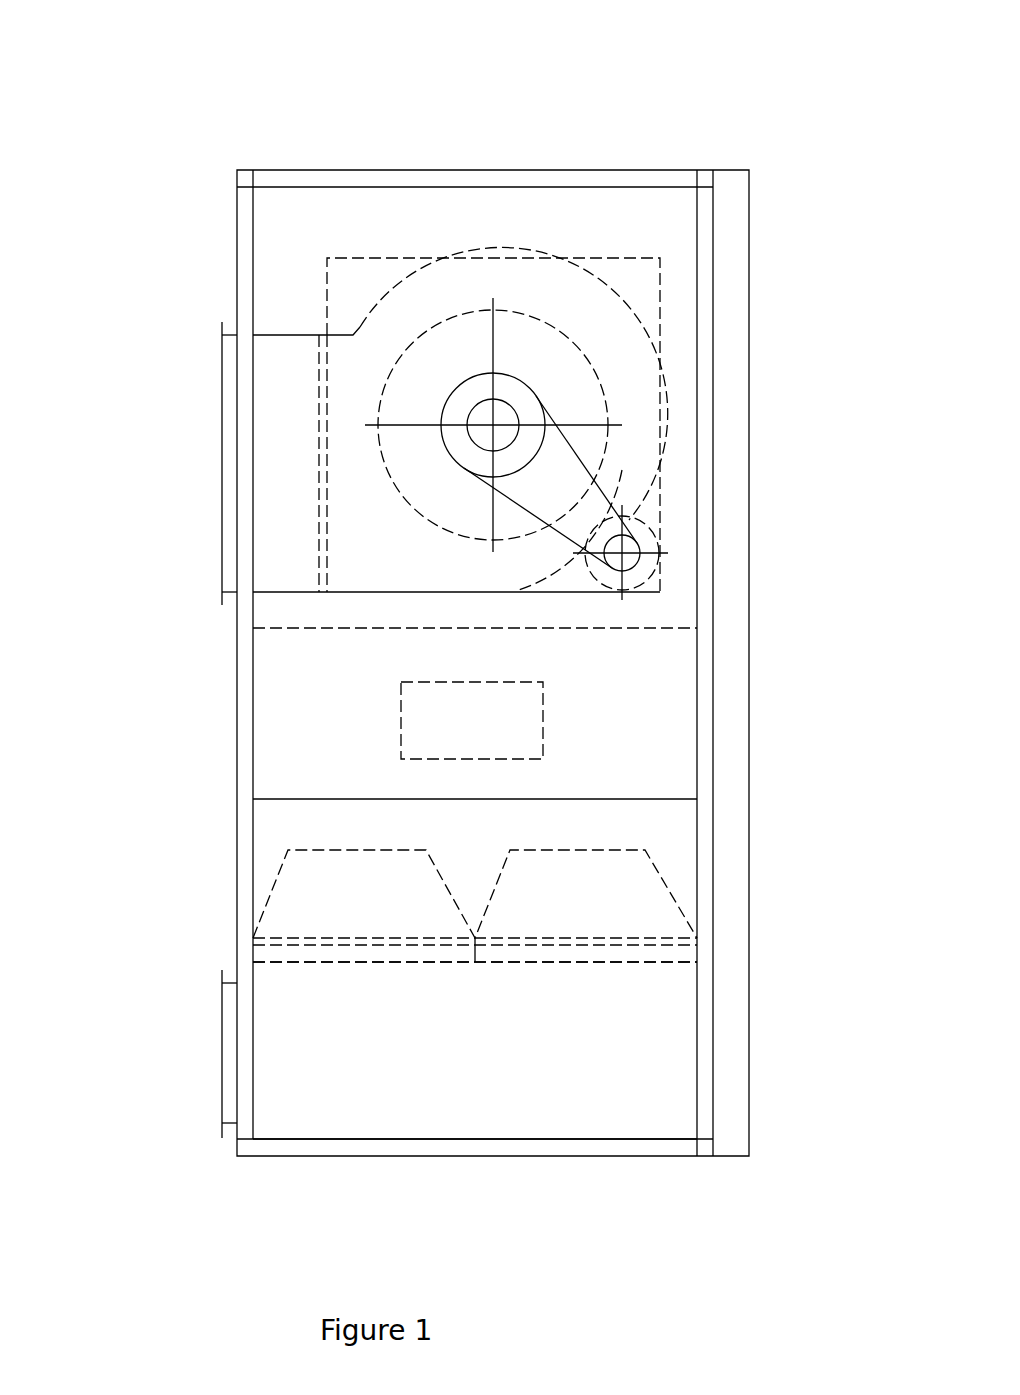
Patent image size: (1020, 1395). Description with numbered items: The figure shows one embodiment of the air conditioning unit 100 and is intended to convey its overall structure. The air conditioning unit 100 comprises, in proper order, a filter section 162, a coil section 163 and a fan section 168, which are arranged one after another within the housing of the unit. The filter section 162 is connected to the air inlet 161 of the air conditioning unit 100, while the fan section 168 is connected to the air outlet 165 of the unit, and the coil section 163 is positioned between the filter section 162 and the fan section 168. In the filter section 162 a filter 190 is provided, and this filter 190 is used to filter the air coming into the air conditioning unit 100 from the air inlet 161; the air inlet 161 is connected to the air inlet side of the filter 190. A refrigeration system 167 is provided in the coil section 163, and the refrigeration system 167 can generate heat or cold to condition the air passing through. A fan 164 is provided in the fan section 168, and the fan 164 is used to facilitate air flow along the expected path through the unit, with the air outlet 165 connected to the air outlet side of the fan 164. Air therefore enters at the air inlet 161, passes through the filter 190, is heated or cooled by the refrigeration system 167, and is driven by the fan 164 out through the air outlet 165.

The air conditioning unit 100 is at (790, 75).
The air inlet 161 is at (222, 1065).
The filter section 162 is at (297, 1007).
The coil section 163 is at (343, 722).
The fan 164 is at (494, 280).
The air outlet 165 is at (222, 455).
The refrigeration system 167 is at (543, 718).
The fan section 168 is at (289, 263).
The filter 190 is at (685, 958).